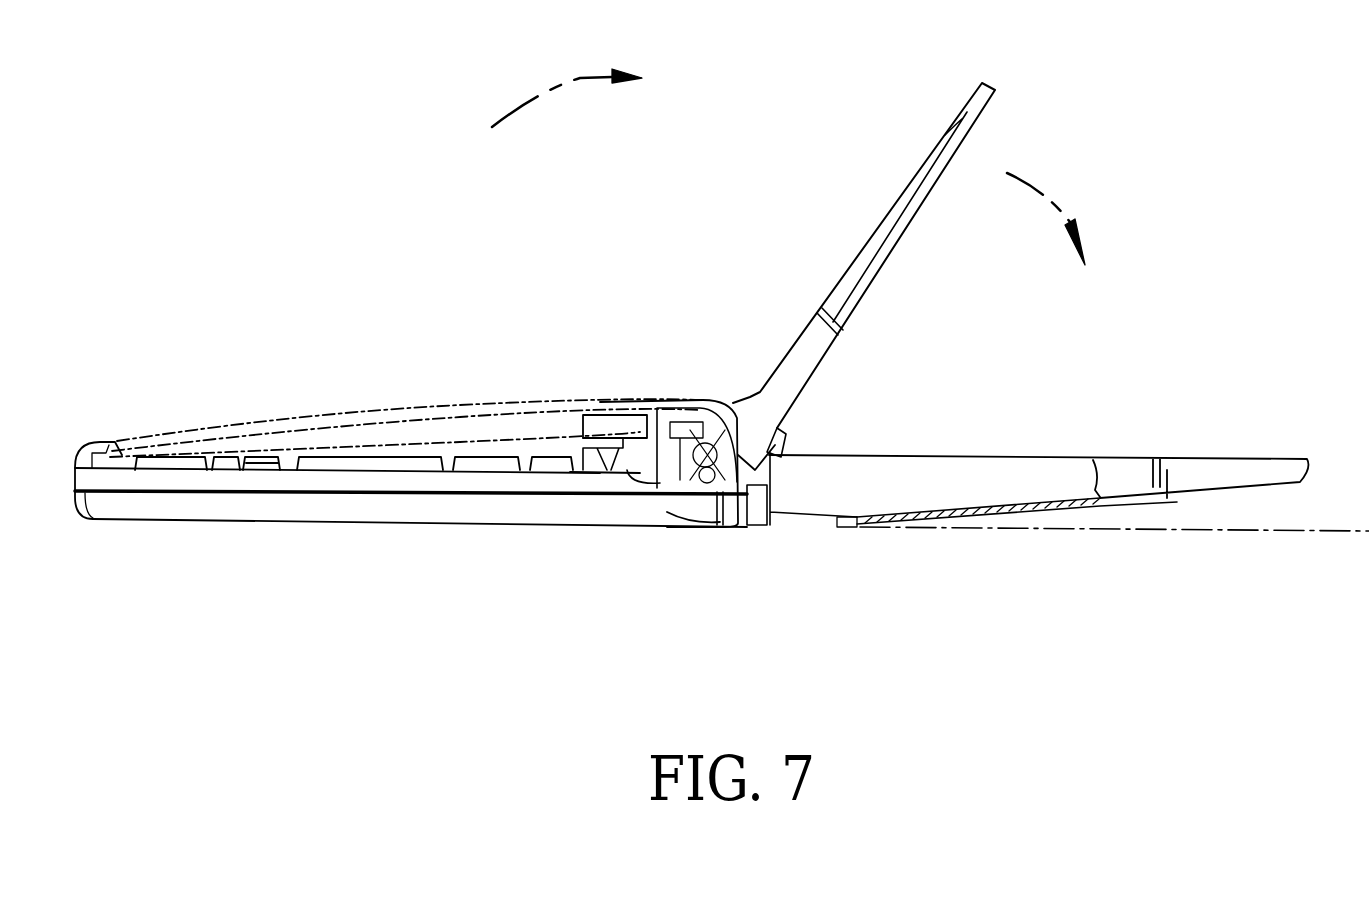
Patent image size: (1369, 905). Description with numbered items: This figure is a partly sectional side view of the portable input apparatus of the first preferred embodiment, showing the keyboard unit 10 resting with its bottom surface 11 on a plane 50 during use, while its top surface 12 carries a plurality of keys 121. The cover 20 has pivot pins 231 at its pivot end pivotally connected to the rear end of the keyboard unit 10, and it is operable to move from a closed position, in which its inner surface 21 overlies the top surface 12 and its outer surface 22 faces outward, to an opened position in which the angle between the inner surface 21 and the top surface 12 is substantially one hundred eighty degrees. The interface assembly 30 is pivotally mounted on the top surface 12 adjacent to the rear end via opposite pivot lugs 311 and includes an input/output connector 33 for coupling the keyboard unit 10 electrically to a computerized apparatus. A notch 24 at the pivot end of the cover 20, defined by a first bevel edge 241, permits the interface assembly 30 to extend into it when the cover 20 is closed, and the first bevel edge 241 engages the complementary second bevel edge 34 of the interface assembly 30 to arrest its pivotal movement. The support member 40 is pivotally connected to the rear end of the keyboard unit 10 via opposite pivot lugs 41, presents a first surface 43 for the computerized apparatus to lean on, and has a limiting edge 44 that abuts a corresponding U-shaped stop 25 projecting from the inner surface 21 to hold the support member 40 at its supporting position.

The keyboard unit 10 is at (302, 524).
The bottom surface 11 is at (181, 525).
The top surface 12 is at (100, 442).
The keys 121 is at (177, 462).
The cover 20 is at (1212, 445).
The inner surface 21 is at (1030, 500).
The outer surface 22 is at (289, 418).
The notch 24 is at (770, 525).
The U-shaped stops 25 is at (800, 487).
The interface assembly 30 is at (603, 472).
The input/output connector 33 is at (583, 437).
The second bevel edge 34 is at (617, 400).
The support member 40 is at (400, 443).
The pivot lugs 41 is at (706, 402).
The first surface 43 is at (877, 227).
The limiting edge 44 is at (772, 452).
The plane 50 is at (1243, 530).
The pivot pins 231 is at (660, 495).
The first bevel edge 241 is at (600, 417).
The pivot lugs 311 is at (736, 400).